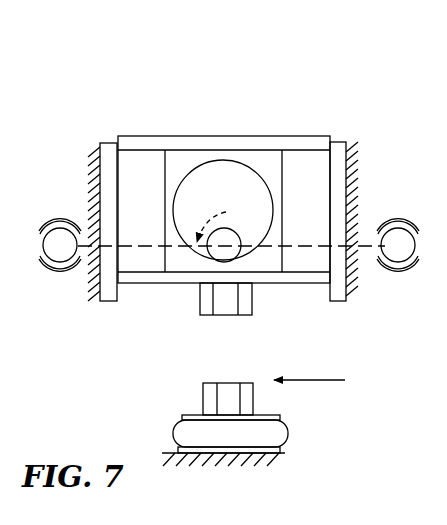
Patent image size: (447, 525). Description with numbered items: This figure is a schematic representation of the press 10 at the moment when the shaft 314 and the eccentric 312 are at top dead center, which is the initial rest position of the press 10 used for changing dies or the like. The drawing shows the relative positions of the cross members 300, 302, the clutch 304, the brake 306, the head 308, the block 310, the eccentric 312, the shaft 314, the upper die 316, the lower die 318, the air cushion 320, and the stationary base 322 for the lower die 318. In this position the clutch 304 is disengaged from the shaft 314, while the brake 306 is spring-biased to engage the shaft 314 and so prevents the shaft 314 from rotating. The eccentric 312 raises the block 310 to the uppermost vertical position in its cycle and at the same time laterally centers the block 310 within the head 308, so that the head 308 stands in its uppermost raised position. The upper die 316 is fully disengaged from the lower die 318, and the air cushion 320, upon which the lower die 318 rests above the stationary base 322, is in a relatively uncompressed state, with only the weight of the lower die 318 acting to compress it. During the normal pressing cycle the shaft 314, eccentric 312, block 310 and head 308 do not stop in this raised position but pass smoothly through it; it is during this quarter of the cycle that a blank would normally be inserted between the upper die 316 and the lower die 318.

The press 10 is at (257, 80).
The cross member 300 is at (103, 142).
The cross member 302 is at (339, 140).
The clutch 304 is at (58, 271).
The brake 306 is at (398, 259).
The head 308 is at (289, 125).
The block 310 is at (166, 162).
The eccentric 312 is at (238, 200).
The shaft 314 is at (212, 260).
The upper die 316 is at (245, 298).
The lower die 318 is at (203, 395).
The air cushion 320 is at (281, 433).
The stationary base 322 is at (264, 459).